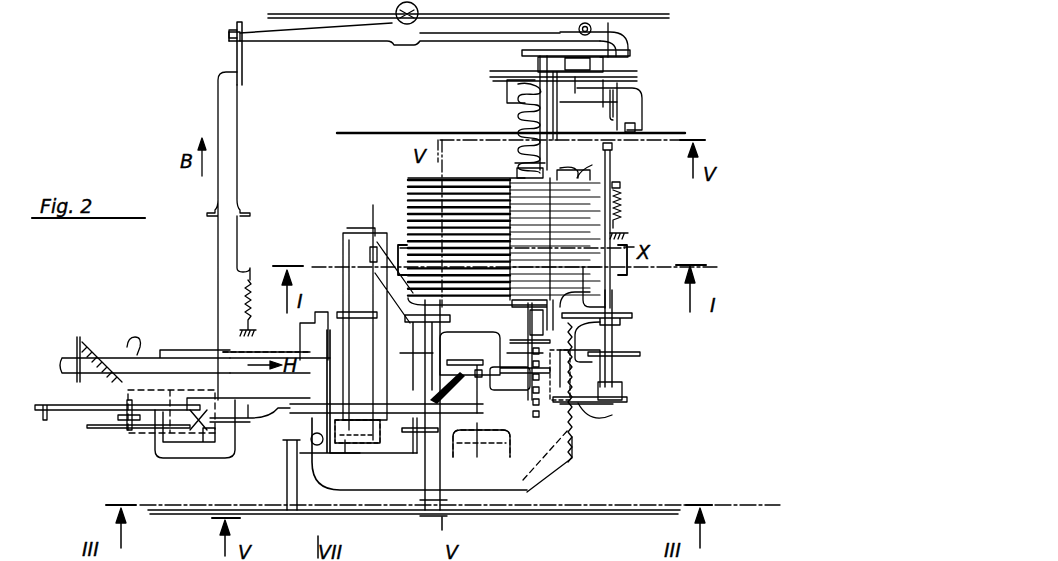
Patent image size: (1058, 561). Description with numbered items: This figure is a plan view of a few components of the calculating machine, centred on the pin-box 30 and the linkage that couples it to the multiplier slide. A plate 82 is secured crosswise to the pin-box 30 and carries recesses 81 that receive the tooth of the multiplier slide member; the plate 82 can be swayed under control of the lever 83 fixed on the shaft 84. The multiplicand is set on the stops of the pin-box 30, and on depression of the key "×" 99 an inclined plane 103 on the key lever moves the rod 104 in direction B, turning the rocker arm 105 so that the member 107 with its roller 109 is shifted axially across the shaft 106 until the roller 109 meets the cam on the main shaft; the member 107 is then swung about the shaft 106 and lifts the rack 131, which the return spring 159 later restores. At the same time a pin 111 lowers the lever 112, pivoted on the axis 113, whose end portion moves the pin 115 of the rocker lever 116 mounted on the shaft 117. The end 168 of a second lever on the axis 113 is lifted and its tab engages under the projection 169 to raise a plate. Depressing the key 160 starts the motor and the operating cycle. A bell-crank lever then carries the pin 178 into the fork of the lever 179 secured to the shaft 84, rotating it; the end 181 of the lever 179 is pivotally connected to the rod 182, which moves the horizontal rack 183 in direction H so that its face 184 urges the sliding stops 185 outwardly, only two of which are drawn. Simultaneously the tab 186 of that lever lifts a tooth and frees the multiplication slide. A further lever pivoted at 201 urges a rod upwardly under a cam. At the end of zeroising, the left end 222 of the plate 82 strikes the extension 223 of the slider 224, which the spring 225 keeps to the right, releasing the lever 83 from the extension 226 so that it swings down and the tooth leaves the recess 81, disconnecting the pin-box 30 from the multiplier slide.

The pin-box 30 is at (353, 218).
The recesses 81 is at (536, 418).
The plate 82 is at (567, 440).
The lever 83 is at (615, 315).
The shaft 84 is at (618, 364).
The key "×" 99 is at (177, 390).
The inclined plane 103 is at (208, 442).
The rod 104 is at (236, 142).
The rocker arm 105 is at (345, 40).
The shaft 106 is at (602, 30).
The member 107 is at (640, 45).
The roller 109 is at (573, 67).
The pin 111 is at (130, 428).
The lever 112 is at (252, 420).
The axis 113 is at (288, 486).
The pin 115 is at (414, 458).
The rocker lever 116 is at (400, 432).
The shaft 117 is at (440, 490).
The rack 131 is at (505, 90).
The return spring 159 is at (520, 118).
The key 160 is at (128, 392).
The end of second lever 168 is at (482, 434).
The projection 169 is at (486, 352).
The pin 178 is at (568, 407).
The lever 179 is at (575, 410).
The end of lever 181 is at (612, 412).
The rod 182 is at (340, 470).
The horizontal rack 183 is at (150, 345).
The face 184 is at (324, 338).
The sliding stops 185 is at (352, 314).
The tab 186 is at (608, 372).
The pivot 201 is at (255, 560).
The left end 222 is at (605, 290).
The extension 223 is at (595, 165).
The slider 224 is at (625, 218).
The spring 225 is at (618, 192).
The extension 226 is at (612, 332).